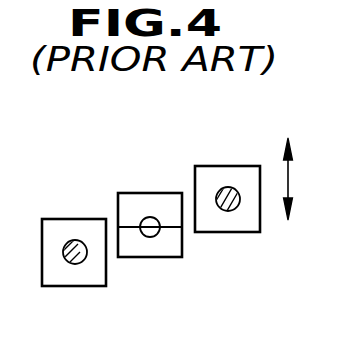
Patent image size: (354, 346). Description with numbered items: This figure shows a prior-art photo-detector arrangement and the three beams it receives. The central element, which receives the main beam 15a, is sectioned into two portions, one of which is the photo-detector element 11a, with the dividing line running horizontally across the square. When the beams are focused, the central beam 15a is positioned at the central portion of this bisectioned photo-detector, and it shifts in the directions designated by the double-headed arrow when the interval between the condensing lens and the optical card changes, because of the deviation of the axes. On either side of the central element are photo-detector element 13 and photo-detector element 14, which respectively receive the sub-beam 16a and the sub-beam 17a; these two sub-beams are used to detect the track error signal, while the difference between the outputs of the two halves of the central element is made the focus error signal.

The photo-detector element 13 is at (67, 219).
The photo-detector element 11a is at (143, 193).
The photo-detector element 14 is at (227, 166).
The sub-beam 16a is at (79, 246).
The central beam 15a is at (150, 228).
The sub-beam 17a is at (224, 209).